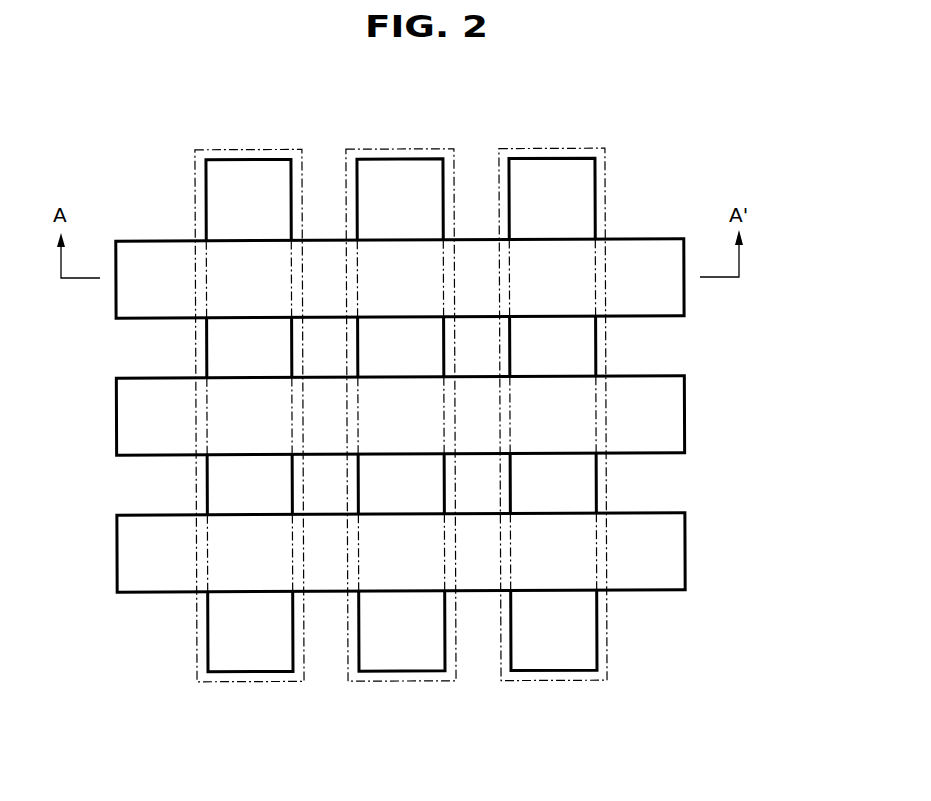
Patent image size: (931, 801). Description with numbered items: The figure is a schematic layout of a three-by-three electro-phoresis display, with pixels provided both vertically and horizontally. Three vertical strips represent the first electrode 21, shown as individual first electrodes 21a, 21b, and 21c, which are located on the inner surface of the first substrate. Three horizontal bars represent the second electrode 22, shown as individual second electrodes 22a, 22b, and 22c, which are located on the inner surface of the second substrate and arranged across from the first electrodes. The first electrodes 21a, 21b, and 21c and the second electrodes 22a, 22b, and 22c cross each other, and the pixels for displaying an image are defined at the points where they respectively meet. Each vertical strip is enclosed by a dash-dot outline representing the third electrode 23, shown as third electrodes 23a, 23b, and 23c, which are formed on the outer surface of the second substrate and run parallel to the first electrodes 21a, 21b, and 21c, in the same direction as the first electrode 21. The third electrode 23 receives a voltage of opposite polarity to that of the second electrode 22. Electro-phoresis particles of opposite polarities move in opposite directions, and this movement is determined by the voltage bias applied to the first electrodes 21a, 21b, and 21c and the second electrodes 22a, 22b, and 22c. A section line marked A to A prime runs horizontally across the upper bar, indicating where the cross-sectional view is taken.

The first electrode 21 is at (401, 449).
The first electrode 21a is at (252, 658).
The first electrode 21b is at (403, 658).
The first electrode 21c is at (555, 658).
The second electrode 22 is at (467, 415).
The second electrode 22a is at (668, 298).
The second electrode 22b is at (668, 432).
The second electrode 22c is at (668, 570).
The third electrode 23 is at (399, 376).
The third electrode 23a is at (232, 148).
The third electrode 23b is at (384, 148).
The third electrode 23c is at (535, 148).